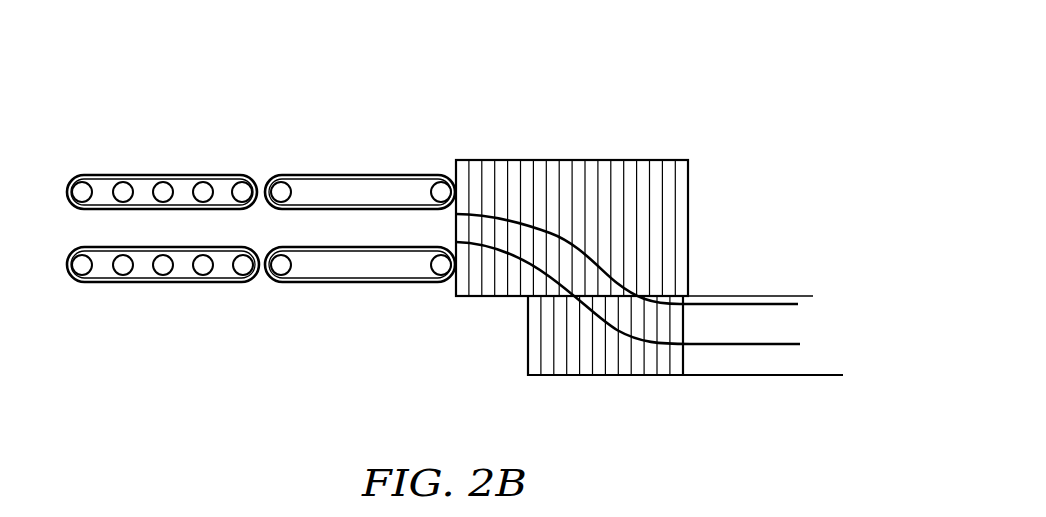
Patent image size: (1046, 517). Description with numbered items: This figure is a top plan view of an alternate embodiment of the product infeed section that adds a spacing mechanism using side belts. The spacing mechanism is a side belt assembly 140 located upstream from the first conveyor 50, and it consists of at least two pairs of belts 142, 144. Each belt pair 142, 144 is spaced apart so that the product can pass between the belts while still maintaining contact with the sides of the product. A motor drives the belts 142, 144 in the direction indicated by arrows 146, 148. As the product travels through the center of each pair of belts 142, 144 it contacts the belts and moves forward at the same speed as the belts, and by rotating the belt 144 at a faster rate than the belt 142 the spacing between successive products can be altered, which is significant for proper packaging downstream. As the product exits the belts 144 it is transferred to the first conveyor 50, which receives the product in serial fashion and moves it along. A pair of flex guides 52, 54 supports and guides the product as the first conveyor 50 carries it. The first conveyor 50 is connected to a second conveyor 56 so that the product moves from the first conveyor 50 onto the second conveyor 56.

The side belt assembly 140 is at (239, 92).
The belt pair 142 is at (185, 176).
The belt pair 144 is at (390, 176).
The arrow 146 is at (51, 182).
The arrow 148 is at (258, 170).
The first conveyor 50 is at (606, 159).
The flex guide 52 is at (724, 302).
The flex guide 54 is at (743, 347).
The second conveyor 56 is at (802, 378).